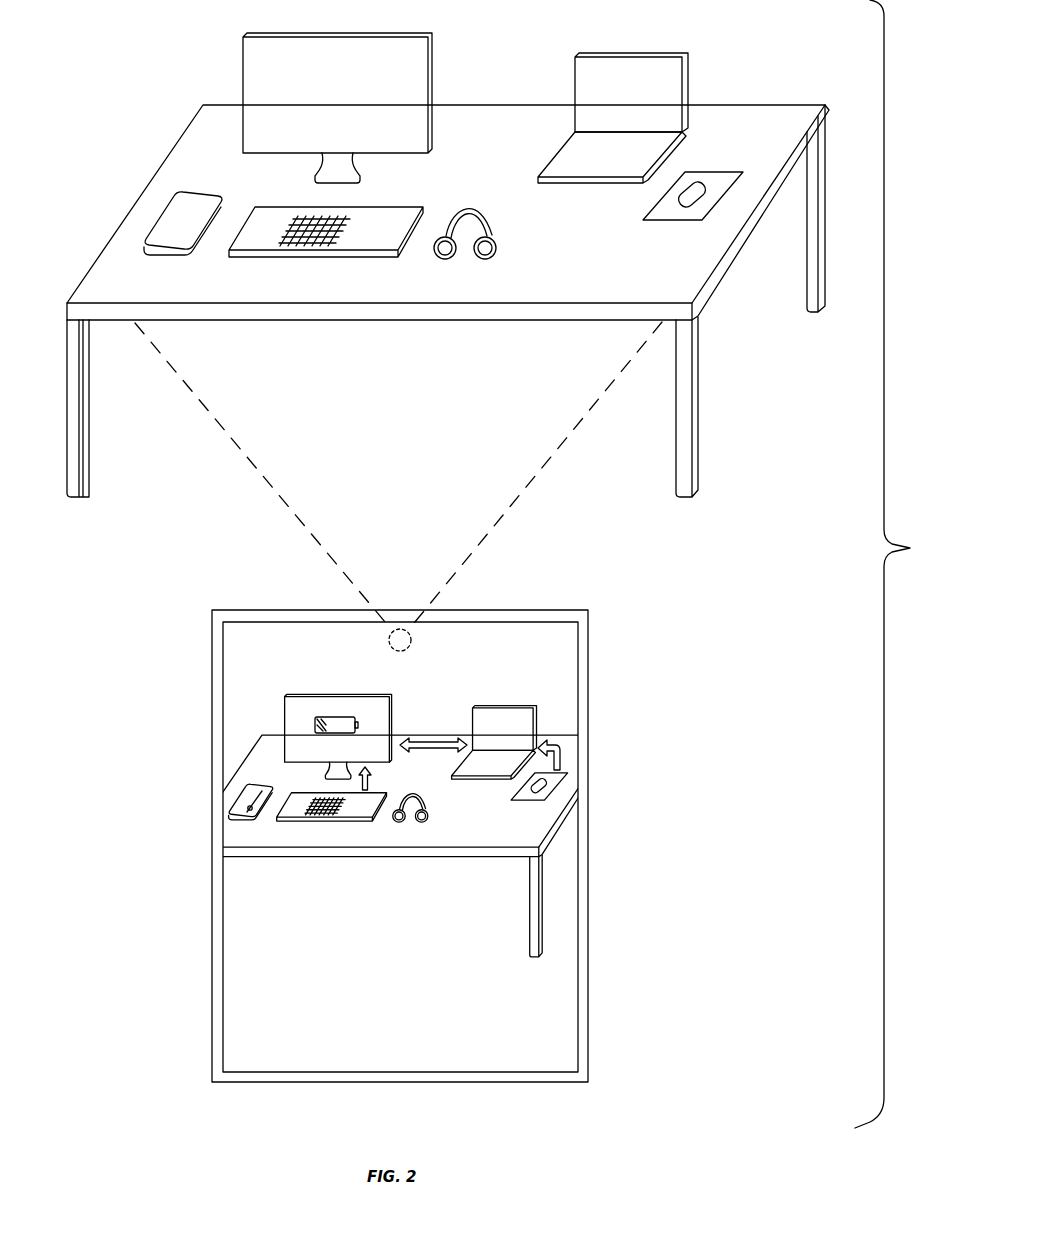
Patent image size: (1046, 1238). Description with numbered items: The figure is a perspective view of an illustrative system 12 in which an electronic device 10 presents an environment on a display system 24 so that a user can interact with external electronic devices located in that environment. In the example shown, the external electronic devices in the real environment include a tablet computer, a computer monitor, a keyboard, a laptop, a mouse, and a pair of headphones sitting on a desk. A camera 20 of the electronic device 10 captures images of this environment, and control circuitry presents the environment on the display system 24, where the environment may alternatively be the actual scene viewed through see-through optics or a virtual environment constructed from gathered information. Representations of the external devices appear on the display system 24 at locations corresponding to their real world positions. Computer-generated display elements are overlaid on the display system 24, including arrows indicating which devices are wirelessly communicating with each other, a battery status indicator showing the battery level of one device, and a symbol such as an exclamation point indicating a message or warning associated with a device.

The electronic device 10 is at (588, 660).
The system 12 is at (893, 564).
The camera 20 is at (400, 627).
The display system 24 is at (558, 1000).